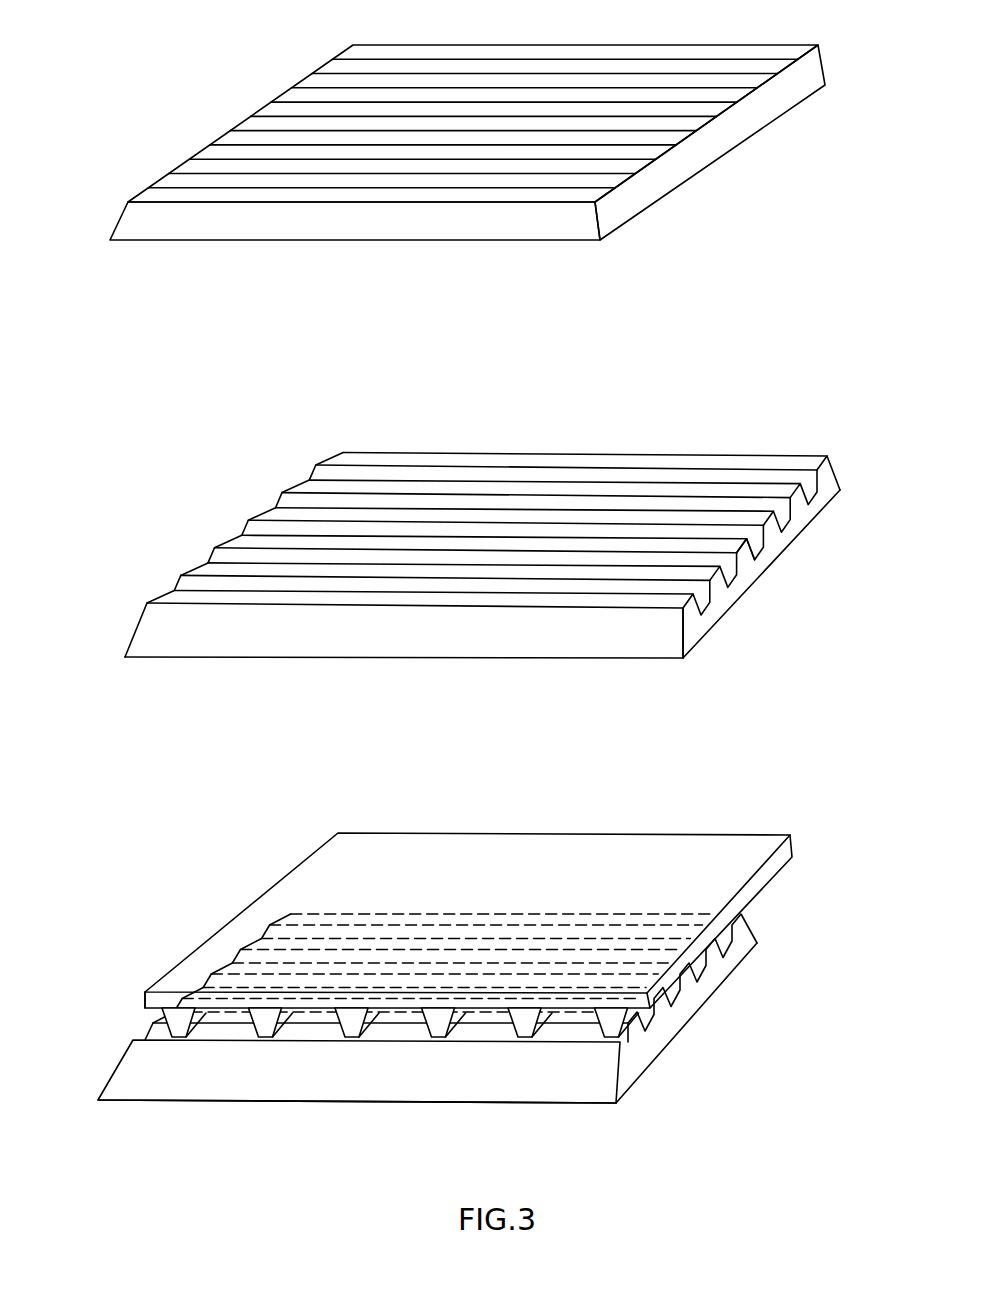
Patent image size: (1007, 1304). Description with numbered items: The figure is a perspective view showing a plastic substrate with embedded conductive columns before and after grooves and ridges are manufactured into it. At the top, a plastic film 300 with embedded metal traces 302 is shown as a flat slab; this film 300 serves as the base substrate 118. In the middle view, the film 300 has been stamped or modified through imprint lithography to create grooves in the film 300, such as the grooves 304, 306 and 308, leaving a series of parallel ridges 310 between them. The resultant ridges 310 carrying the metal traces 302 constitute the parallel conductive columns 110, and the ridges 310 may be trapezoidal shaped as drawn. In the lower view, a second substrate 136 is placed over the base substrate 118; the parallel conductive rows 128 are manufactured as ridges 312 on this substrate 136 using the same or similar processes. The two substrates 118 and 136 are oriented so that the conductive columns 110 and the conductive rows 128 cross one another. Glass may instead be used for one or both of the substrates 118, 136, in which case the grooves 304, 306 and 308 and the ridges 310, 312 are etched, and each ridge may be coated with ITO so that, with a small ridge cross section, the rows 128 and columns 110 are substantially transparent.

The plastic film 300 is at (250, 228).
The metal traces 302 is at (150, 193).
The groove 304 is at (702, 600).
The groove 306 is at (737, 583).
The groove 308 is at (755, 547).
The ridges 310 is at (645, 1068).
The ridges 312 is at (623, 1023).
The substrate 136 is at (353, 863).
The conductive columns 110 is at (287, 917).
The base substrate 118 is at (124, 1080).
The conductive rows 128 is at (620, 1055).